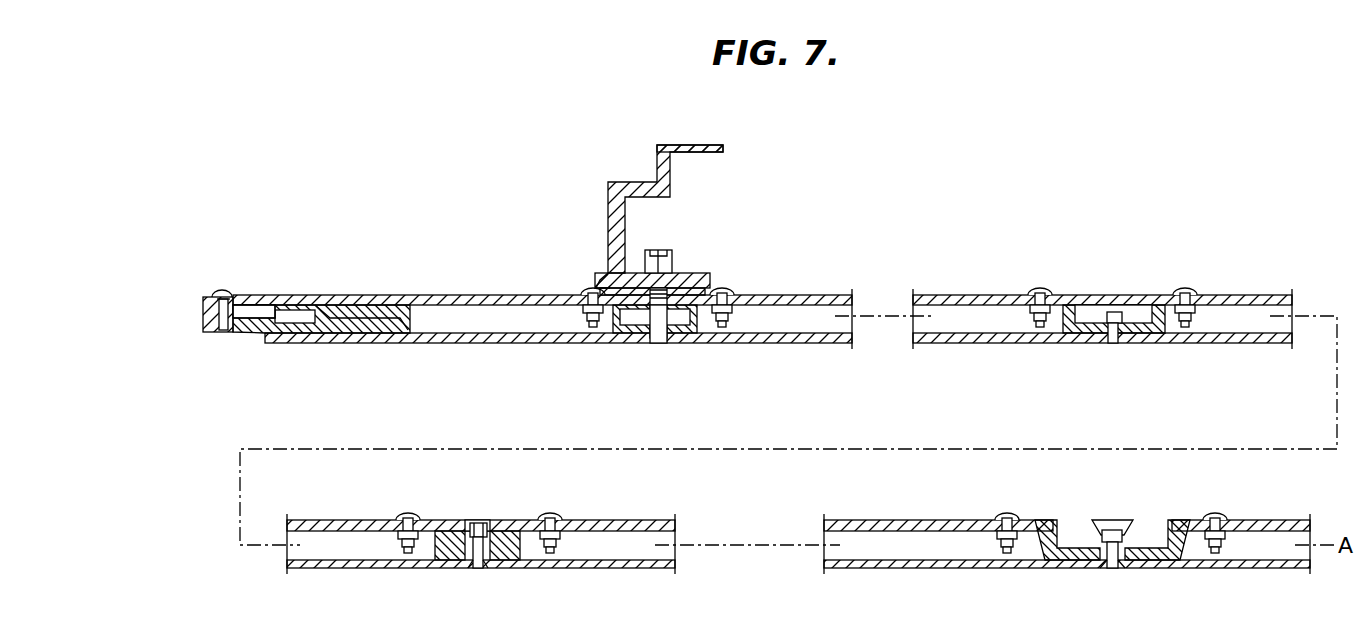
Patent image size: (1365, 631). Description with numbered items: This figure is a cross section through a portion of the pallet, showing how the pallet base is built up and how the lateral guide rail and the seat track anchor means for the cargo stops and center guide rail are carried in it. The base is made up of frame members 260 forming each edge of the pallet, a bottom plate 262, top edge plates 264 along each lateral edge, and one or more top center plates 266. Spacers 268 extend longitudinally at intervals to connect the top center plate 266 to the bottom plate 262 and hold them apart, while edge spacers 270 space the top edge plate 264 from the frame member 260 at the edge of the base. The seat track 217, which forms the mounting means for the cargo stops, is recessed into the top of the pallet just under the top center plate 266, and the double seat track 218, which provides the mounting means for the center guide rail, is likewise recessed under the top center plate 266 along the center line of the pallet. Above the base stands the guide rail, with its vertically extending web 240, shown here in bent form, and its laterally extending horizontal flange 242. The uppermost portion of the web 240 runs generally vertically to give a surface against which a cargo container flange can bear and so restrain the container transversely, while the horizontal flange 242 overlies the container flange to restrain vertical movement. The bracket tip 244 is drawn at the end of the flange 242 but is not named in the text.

The seat track 217 is at (500, 520).
The double seat track 218 is at (1056, 520).
The vertically extending web 240 is at (697, 273).
The horizontal flange 242 is at (657, 165).
The bracket flange 244 is at (707, 145).
The frame member 260 is at (283, 360).
The bottom plate 262 is at (530, 343).
The top edge plate 264 is at (355, 295).
The top center plate 266 is at (803, 295).
The spacer 268 is at (1166, 333).
The edge spacer 270 is at (218, 297).